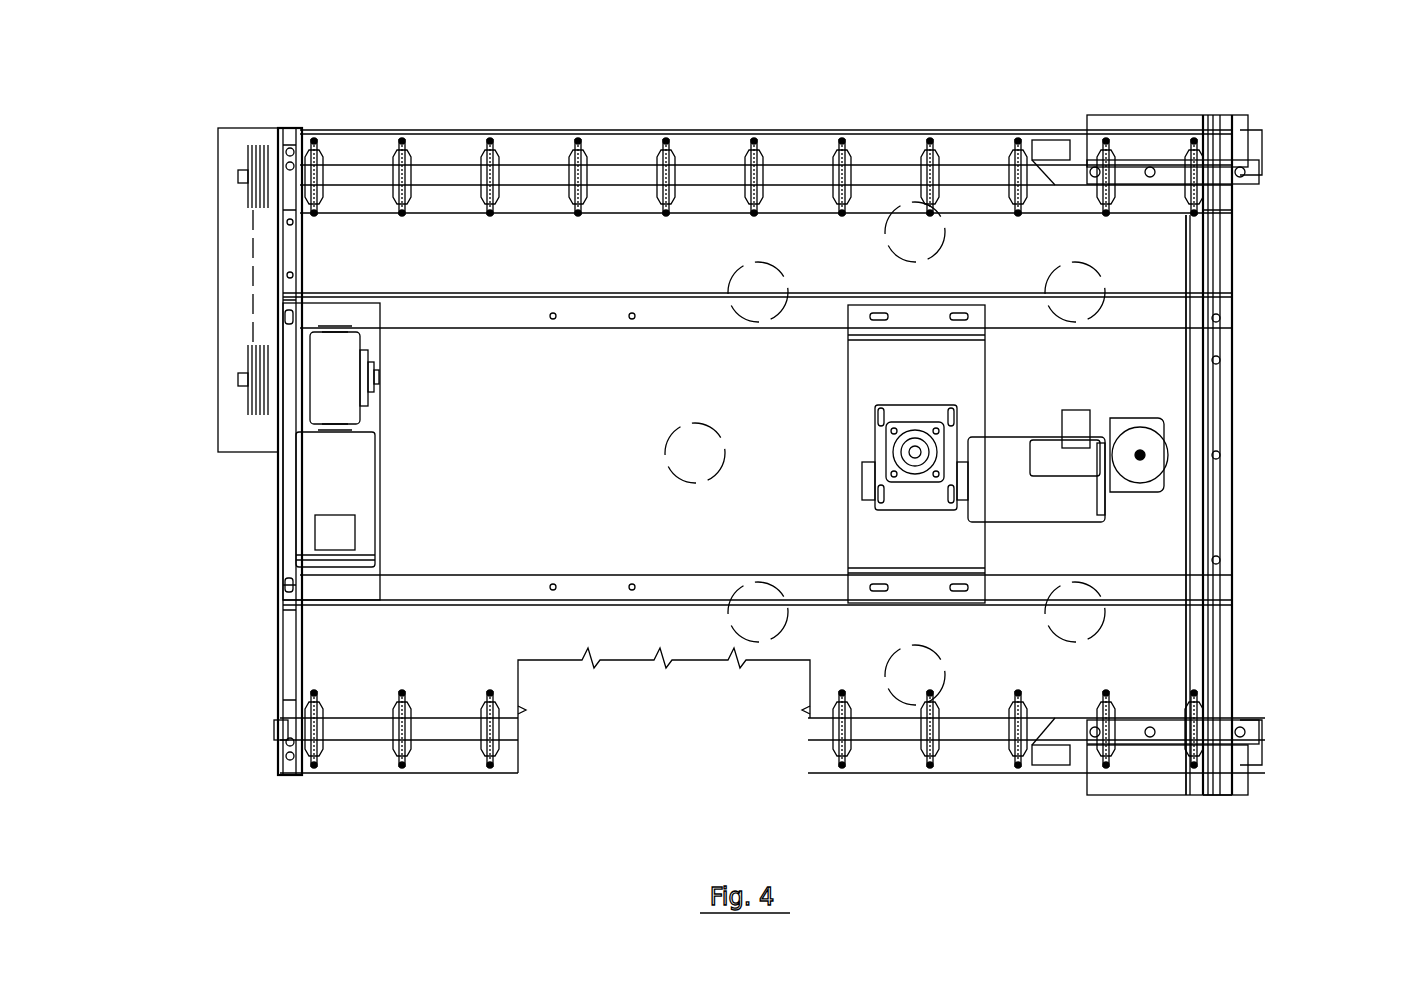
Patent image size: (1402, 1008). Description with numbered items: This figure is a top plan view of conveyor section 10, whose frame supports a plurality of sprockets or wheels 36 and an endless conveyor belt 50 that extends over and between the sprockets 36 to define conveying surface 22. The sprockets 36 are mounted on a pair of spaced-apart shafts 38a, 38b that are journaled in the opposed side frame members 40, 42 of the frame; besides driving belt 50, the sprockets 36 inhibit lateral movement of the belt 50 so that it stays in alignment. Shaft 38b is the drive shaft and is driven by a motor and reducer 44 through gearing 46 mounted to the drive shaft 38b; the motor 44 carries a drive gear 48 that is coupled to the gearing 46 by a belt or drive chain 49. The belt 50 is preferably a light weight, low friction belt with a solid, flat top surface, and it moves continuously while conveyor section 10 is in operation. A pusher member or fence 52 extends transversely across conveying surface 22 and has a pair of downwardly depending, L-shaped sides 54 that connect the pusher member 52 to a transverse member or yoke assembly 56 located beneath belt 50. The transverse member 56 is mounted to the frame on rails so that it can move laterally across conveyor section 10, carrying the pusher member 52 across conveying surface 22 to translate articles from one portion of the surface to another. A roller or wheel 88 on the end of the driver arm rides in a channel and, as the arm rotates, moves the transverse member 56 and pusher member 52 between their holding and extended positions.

The conveyor section 10 is at (258, 688).
The conveying surface 22 is at (692, 754).
The sprockets or wheels 36 is at (466, 165).
The shaft 38a is at (355, 722).
The drive shaft 38b is at (340, 165).
The side frame member 40 is at (282, 652).
The side frame member 42 is at (1232, 678).
The motor and reducer 44 is at (268, 462).
The gearing 46 is at (240, 180).
The drive gear 48 is at (242, 378).
The drive chain 49 is at (253, 275).
The conveyor belt 50 is at (552, 673).
The pusher member or fence 52 is at (1232, 248).
The sides 54 is at (1147, 115).
The transverse member or yoke assembly 56 is at (1186, 372).
The roller or wheel 88 is at (707, 427).